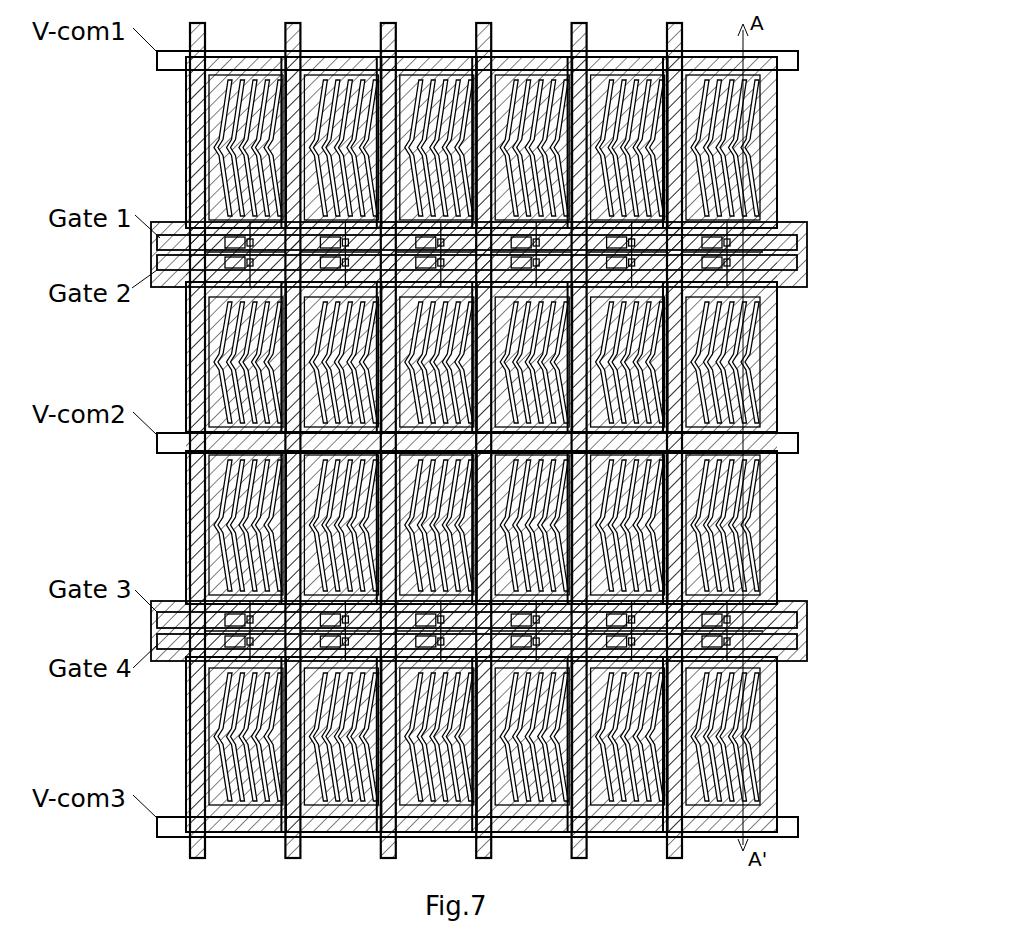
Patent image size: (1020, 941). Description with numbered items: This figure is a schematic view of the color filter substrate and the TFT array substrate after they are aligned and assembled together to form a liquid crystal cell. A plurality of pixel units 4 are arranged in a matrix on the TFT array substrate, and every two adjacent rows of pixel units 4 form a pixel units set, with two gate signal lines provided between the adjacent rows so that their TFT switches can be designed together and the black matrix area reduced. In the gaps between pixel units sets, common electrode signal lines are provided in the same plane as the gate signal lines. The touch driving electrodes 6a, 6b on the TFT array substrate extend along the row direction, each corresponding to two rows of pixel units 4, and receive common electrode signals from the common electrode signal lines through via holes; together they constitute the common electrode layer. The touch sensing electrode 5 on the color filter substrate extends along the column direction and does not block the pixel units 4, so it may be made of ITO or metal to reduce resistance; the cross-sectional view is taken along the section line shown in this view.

The pixel unit 4 is at (775, 146).
The touch sensing electrode 5 is at (519, 219).
The touch driving electrode 6a is at (777, 318).
The touch driving electrode 6b is at (770, 763).